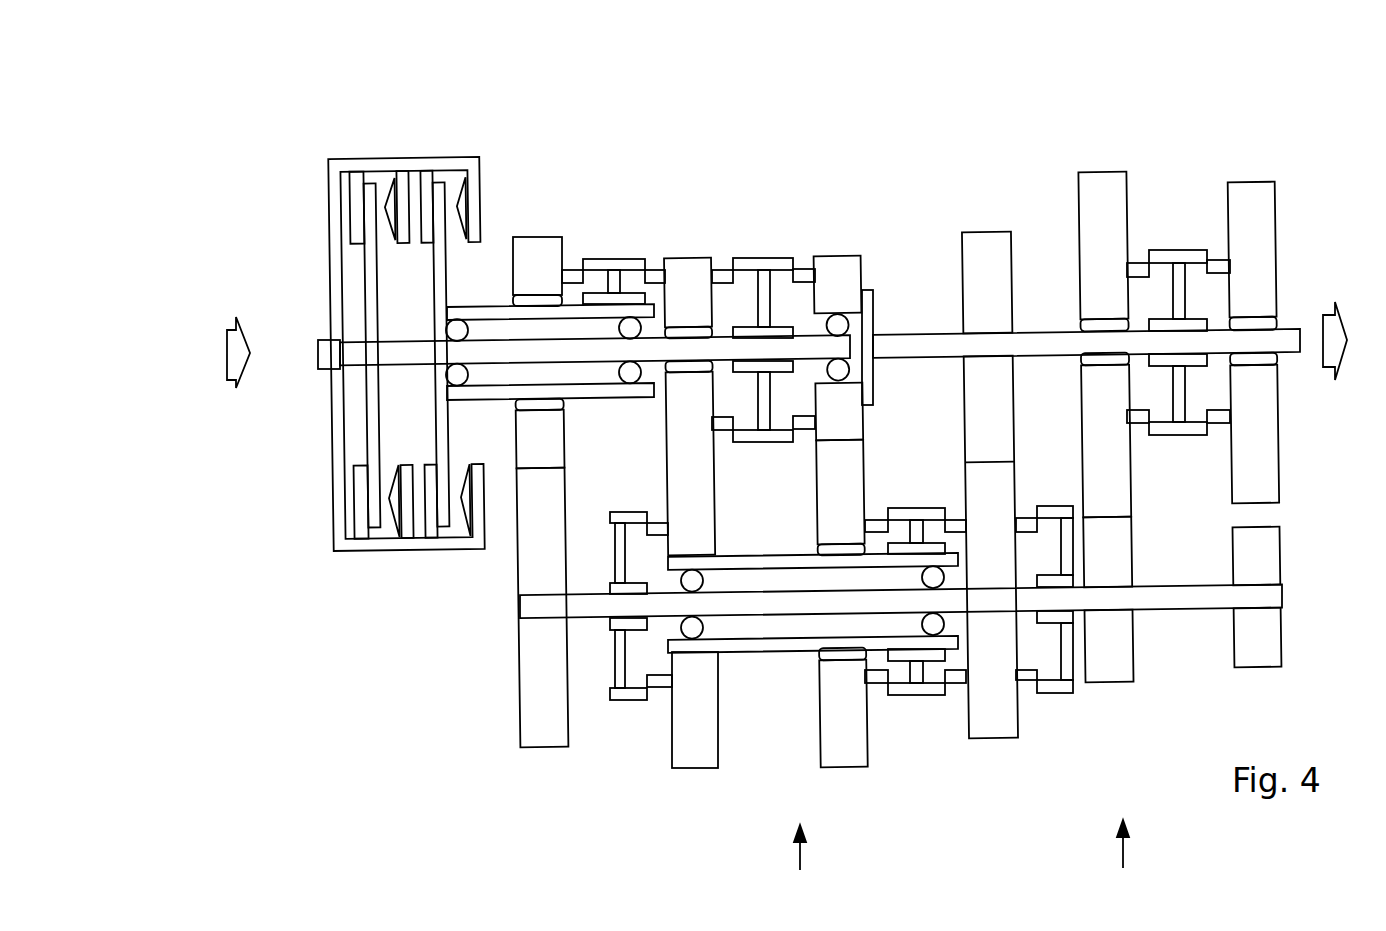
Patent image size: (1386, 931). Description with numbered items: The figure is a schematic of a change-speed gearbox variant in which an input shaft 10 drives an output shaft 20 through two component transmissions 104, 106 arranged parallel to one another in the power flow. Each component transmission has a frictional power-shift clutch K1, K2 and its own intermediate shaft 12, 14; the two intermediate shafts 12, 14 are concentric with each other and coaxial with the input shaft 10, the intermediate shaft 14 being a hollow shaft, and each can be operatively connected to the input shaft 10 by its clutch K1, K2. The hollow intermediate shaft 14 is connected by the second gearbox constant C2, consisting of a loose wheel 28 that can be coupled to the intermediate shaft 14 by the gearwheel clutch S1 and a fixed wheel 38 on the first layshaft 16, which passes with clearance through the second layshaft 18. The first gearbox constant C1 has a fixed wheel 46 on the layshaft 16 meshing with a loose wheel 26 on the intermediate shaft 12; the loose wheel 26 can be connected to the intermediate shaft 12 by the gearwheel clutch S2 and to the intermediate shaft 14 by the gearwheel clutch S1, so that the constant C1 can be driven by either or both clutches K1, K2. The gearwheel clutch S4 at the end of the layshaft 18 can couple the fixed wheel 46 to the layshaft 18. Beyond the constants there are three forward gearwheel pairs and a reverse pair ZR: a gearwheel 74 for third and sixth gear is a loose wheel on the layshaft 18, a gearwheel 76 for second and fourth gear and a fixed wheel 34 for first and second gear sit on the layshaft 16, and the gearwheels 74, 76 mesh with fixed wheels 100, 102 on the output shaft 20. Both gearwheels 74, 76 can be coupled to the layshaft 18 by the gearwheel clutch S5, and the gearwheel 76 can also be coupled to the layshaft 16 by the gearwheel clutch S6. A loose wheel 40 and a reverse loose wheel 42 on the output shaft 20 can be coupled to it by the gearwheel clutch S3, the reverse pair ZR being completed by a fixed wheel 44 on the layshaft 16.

The input shaft 10 is at (320, 358).
The intermediate shaft 12 is at (377, 353).
The intermediate shaft 14 is at (468, 306).
The layshaft 16 is at (600, 606).
The layshaft 18 is at (692, 652).
The output shaft 20 is at (1277, 340).
The loose wheel 26 is at (690, 420).
The loose wheel 28 is at (548, 440).
The fixed wheel 34 is at (1118, 550).
The fixed wheel 38 is at (545, 723).
The loose wheel 40 is at (1100, 268).
The loose wheel 42 is at (1252, 217).
The fixed wheel 44 is at (1258, 560).
The fixed wheel 46 is at (695, 722).
The gearwheel 74 is at (840, 475).
The gearwheel 76 is at (990, 495).
The fixed wheel 100 is at (838, 428).
The fixed wheel 102 is at (975, 290).
The component transmission 104 is at (813, 865).
The component transmission 106 is at (1136, 861).
The power-shift clutch K1 is at (380, 527).
The power-shift clutch K2 is at (449, 527).
The first gearbox constant C1 is at (730, 315).
The second gearbox constant C2 is at (533, 209).
The gearwheel clutch S1 is at (618, 258).
The gearwheel clutch S2 is at (767, 257).
The gearwheel clutch S3 is at (1182, 250).
The gearwheel clutch S4 is at (637, 700).
The gearwheel clutch S5 is at (913, 693).
The gearwheel clutch S6 is at (1052, 693).
The gearwheel pair ZR is at (1295, 287).